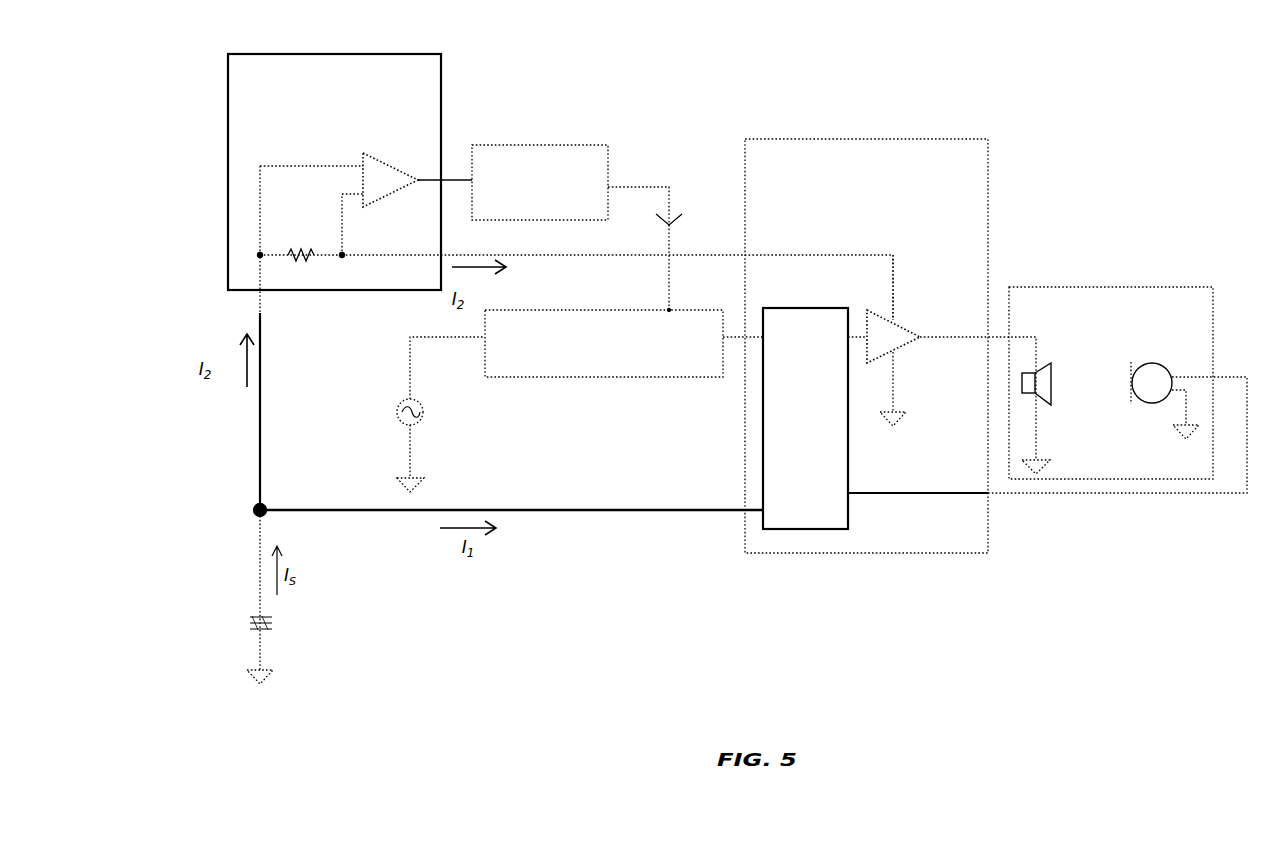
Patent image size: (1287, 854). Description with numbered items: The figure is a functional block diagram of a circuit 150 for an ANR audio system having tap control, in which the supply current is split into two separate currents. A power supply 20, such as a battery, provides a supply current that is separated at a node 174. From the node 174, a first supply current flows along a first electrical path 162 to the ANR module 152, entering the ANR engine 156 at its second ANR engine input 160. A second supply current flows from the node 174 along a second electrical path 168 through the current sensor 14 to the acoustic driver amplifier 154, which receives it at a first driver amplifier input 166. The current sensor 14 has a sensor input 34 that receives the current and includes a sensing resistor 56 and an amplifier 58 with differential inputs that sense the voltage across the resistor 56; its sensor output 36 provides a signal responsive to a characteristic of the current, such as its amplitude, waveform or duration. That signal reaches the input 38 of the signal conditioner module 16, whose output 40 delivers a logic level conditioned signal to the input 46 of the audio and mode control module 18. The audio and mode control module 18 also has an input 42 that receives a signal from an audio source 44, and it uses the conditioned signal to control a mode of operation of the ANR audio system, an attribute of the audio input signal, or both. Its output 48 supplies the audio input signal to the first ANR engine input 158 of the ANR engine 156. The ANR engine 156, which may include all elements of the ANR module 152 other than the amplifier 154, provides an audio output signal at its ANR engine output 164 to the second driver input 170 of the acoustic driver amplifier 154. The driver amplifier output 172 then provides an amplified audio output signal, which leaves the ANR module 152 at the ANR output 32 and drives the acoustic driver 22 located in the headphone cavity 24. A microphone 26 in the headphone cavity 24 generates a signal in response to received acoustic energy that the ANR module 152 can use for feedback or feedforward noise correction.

The circuit 150 is at (1092, 126).
The current sensor 14 is at (334, 172).
The amplifier 58 is at (339, 180).
The sensing resistor 56 is at (303, 250).
The sensor input 34 is at (344, 253).
The sensor output 36 is at (450, 180).
The input 38 is at (472, 180).
The signal conditioner module 16 is at (540, 182).
The output 40 is at (610, 187).
The second electrical path 168 is at (262, 409).
The input 46 is at (672, 310).
The audio and mode control module 18 is at (604, 343).
The output 48 is at (727, 337).
The first ANR engine input 158 is at (760, 365).
The input 42 is at (487, 340).
The audio source 44 is at (397, 411).
The node 174 is at (253, 507).
The first electrical path 162 is at (600, 512).
The second ANR engine input 160 is at (762, 508).
The power supply 20 is at (256, 620).
The ANR module 152 is at (866, 346).
The ANR engine 156 is at (805, 418).
The ANR engine output 164 is at (855, 333).
The acoustic driver amplifier 154 is at (893, 336).
The first driver amplifier input 166 is at (895, 323).
The second driver input 170 is at (858, 340).
The ANR output 32 is at (988, 337).
The driver amplifier output 172 is at (920, 340).
The headphone cavity 24 is at (1111, 383).
The acoustic driver 22 is at (1053, 390).
The microphone 26 is at (1155, 403).